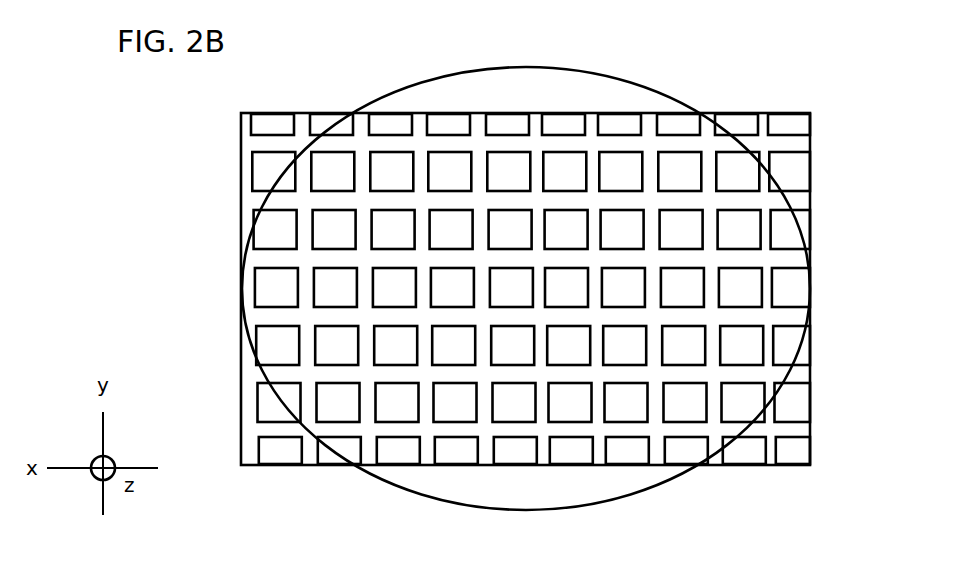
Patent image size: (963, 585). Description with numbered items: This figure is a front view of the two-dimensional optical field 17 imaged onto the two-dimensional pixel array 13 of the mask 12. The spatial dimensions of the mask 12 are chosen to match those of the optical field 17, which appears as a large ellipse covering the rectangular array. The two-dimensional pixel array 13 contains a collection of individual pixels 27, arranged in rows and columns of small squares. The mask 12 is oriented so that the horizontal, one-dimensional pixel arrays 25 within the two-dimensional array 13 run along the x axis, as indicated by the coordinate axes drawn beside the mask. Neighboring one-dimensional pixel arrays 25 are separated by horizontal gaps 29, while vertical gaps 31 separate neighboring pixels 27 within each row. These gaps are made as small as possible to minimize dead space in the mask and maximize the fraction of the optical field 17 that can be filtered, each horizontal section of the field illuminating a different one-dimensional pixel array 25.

The mask 12 is at (188, 126).
The two-dimensional pixel array 13 is at (810, 140).
The two-dimensional optical field 17 is at (600, 86).
The one-dimensional pixel array 25 is at (830, 286).
The pixel 27 is at (583, 300).
The horizontal gap 29 is at (767, 253).
The vertical gap 31 is at (425, 437).